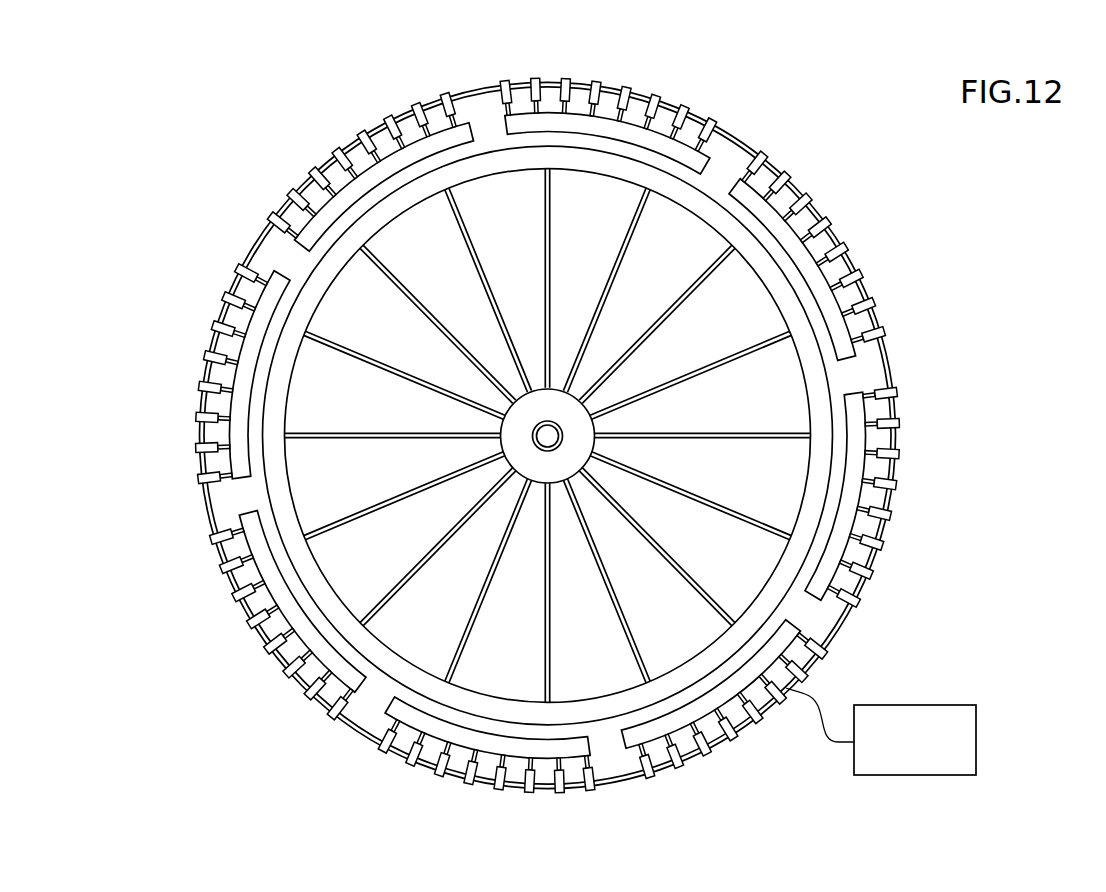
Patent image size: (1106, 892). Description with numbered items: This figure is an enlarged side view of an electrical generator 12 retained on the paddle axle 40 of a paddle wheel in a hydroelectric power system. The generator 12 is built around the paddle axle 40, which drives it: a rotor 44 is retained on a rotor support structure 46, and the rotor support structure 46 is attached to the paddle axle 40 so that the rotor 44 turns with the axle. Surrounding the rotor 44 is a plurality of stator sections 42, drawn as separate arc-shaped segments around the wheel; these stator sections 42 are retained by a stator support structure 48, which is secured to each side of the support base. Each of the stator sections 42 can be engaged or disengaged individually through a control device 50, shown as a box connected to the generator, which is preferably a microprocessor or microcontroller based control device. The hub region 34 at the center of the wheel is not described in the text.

The electrical generator 12 is at (883, 296).
The hub 34 is at (537, 385).
The paddle axle 40 is at (551, 433).
The stator sections 42 is at (668, 153).
The rotor 44 is at (760, 220).
The rotor support structure 46 is at (755, 393).
The stator support structure 48 is at (410, 112).
The control device 50 is at (976, 737).